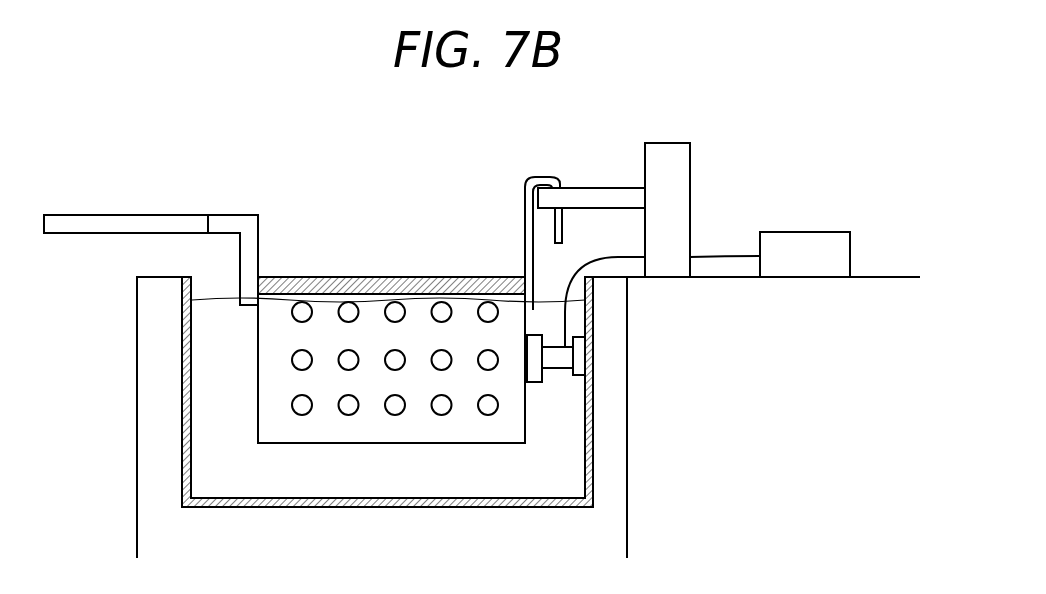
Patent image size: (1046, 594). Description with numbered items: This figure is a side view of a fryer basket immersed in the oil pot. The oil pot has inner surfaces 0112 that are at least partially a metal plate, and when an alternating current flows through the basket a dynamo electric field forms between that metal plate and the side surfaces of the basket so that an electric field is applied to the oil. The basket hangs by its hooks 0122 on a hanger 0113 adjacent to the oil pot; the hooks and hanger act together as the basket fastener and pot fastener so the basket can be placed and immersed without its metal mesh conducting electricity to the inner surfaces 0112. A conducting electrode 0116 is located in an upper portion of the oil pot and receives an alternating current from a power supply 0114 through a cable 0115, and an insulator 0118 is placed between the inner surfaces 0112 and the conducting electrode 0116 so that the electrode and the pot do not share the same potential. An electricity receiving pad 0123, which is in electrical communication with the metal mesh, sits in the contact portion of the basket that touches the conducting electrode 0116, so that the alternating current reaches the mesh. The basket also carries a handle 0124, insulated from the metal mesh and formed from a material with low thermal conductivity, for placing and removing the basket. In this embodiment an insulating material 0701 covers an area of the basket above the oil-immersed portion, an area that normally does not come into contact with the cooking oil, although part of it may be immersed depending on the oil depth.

The inner surfaces 0112 is at (582, 470).
The hanger 0113 is at (672, 143).
The power supply 0114 is at (847, 231).
The cable 0115 is at (723, 255).
The conducting electrode 0116 is at (558, 357).
The insulator 0118 is at (578, 349).
The hooks 0122 is at (540, 178).
The electricity receiving pad 0123 is at (547, 383).
The handle 0124 is at (165, 215).
The insulating material 0701 is at (364, 287).